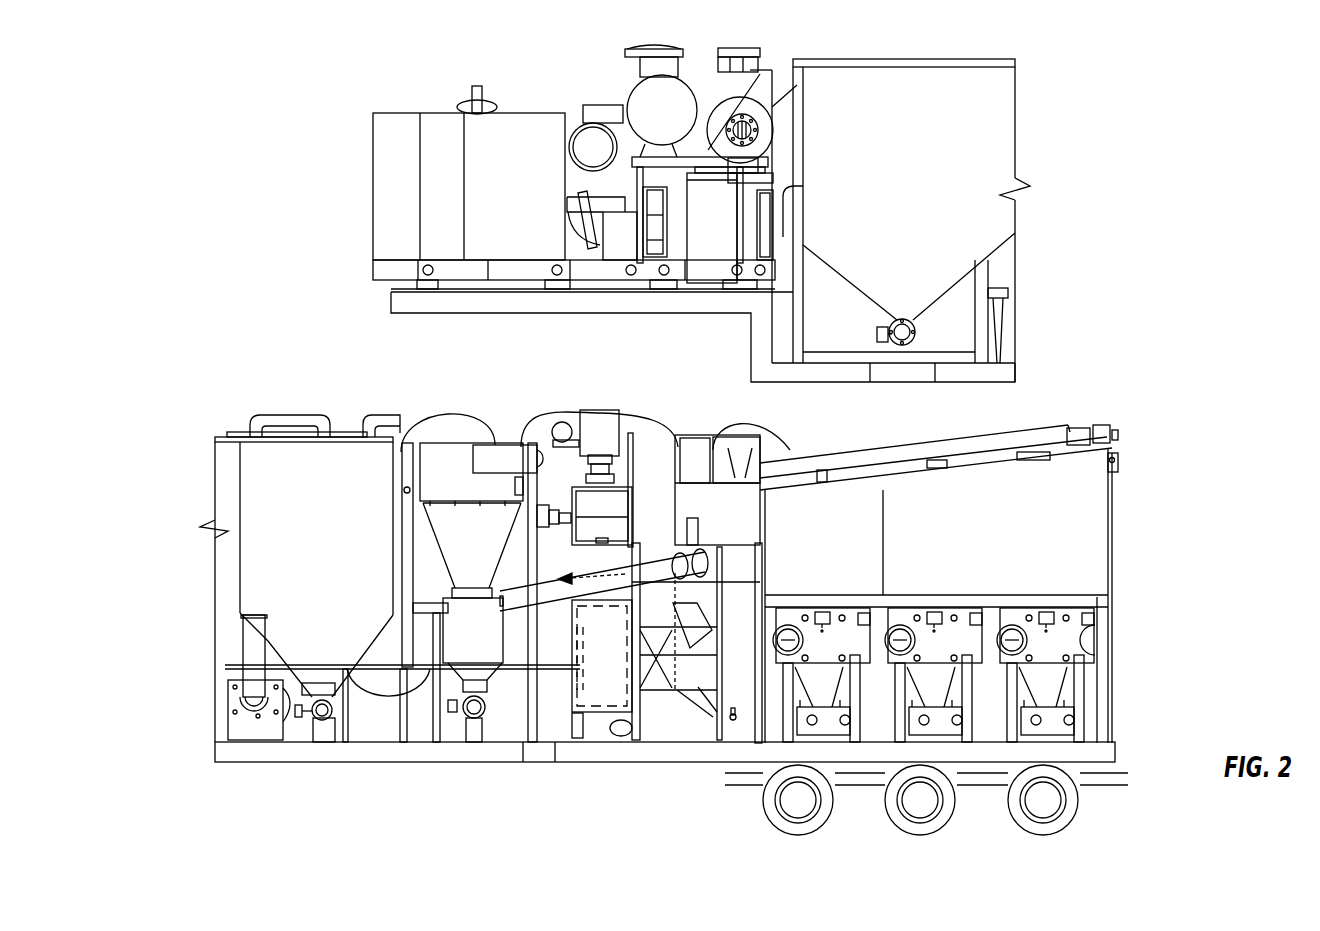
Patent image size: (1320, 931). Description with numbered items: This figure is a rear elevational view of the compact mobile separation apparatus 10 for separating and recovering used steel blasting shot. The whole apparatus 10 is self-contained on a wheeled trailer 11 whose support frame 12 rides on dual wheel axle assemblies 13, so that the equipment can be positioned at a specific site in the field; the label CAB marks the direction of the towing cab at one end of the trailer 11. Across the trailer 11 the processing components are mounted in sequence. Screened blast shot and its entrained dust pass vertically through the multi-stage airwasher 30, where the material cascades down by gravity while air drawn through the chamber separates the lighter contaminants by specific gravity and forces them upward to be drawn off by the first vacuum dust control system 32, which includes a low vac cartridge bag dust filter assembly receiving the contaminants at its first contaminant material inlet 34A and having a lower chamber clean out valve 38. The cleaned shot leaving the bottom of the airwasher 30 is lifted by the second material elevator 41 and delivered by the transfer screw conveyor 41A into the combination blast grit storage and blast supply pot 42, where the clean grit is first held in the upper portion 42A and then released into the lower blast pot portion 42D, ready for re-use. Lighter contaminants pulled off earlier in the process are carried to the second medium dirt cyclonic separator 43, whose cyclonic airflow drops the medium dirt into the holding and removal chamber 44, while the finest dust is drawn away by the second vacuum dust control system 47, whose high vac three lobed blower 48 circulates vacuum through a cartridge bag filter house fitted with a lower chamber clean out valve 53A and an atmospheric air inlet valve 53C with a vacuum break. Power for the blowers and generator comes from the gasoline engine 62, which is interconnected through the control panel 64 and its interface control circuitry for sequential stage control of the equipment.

The mobile separation apparatus 10 is at (338, 160).
The wheeled trailer 11 is at (732, 349).
The support frame 12 is at (488, 301).
The dual wheel axle assemblies 13 is at (1112, 772).
The multi-stage airwasher 30 is at (692, 605).
The first vacuum dust control system 32 is at (292, 457).
The first contaminant material inlet 34A is at (440, 578).
The lower chamber clean out valve 38 is at (300, 717).
The second material elevator 41 is at (732, 495).
The transfer screw conveyor 41A is at (972, 446).
The combination blast grit storage and blast supply pot 42 is at (1120, 517).
The upper portion 42A is at (1040, 557).
The lower blast pot portion 42D is at (1062, 672).
The second medium dirt cyclonic separator 43 is at (470, 458).
The holding and removal chamber 44 is at (463, 630).
The second vacuum dust control system 47 is at (980, 122).
The high vac three lobed air injection high vac blower 48 is at (658, 243).
The lower chamber clean out valve 53A is at (917, 330).
The atmospheric air inlet valve 53C is at (765, 172).
The gasoline engine 62 is at (388, 167).
The control panel 64 is at (575, 737).
The cab direction CAB is at (1118, 716).